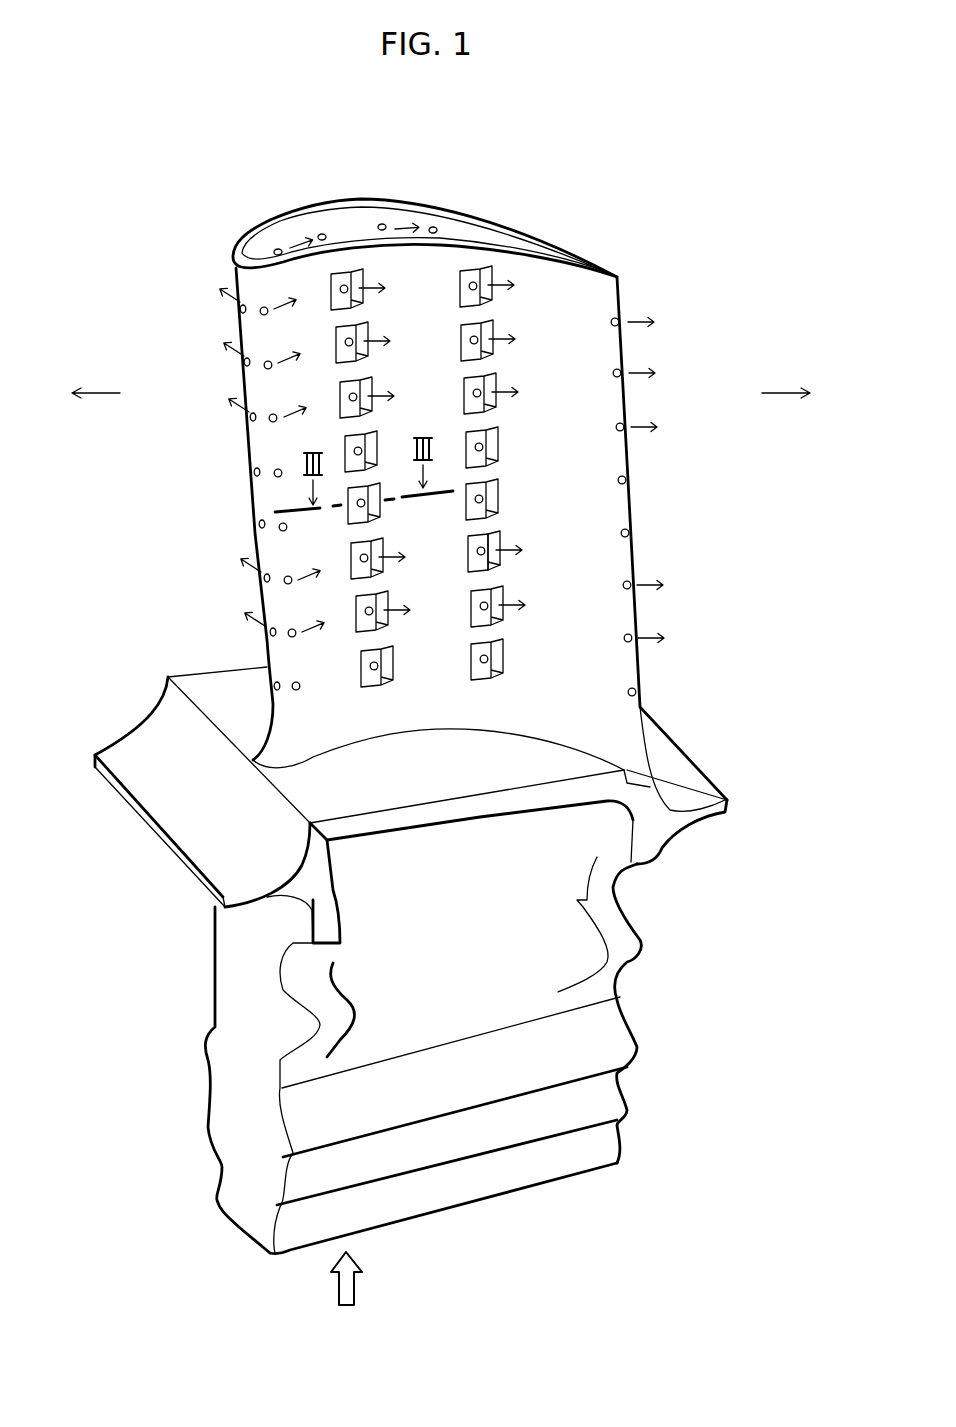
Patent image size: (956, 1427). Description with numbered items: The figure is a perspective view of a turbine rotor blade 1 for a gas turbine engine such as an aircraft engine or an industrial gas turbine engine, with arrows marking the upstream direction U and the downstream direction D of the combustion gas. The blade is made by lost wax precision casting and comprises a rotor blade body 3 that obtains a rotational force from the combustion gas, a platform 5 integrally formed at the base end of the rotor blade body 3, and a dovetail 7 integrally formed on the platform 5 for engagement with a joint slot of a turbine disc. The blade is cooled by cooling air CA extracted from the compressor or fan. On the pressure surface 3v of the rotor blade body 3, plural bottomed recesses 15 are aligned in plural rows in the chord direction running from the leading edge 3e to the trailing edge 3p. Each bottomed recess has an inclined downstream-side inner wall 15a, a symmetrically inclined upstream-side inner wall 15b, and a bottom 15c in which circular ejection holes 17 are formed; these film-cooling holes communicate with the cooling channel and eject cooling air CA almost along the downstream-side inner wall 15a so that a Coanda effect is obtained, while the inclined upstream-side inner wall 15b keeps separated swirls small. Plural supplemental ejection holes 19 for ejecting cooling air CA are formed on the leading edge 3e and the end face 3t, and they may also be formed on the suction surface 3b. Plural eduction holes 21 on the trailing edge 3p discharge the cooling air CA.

The turbine rotor blade 1 is at (573, 178).
The rotor blade body 3 is at (250, 477).
The end face 3t is at (340, 227).
The leading edge 3e is at (237, 332).
The trailing edge 3p is at (628, 457).
The suction surface 3b is at (580, 502).
The pressure surface 3v is at (284, 500).
The platform 5 is at (145, 747).
The dovetail 7 is at (212, 1083).
The bottomed recesses 15 is at (344, 352).
The downstream-side inner wall 15a is at (498, 548).
The upstream-side inner wall 15b is at (471, 557).
The bottom 15c is at (478, 562).
The ejection holes 17 is at (344, 343).
The supplemental ejection holes 19 is at (278, 248).
The eduction holes 21 is at (615, 326).
The cooling air CA is at (289, 246).
The upstream direction U is at (84, 392).
The downstream direction D is at (797, 392).